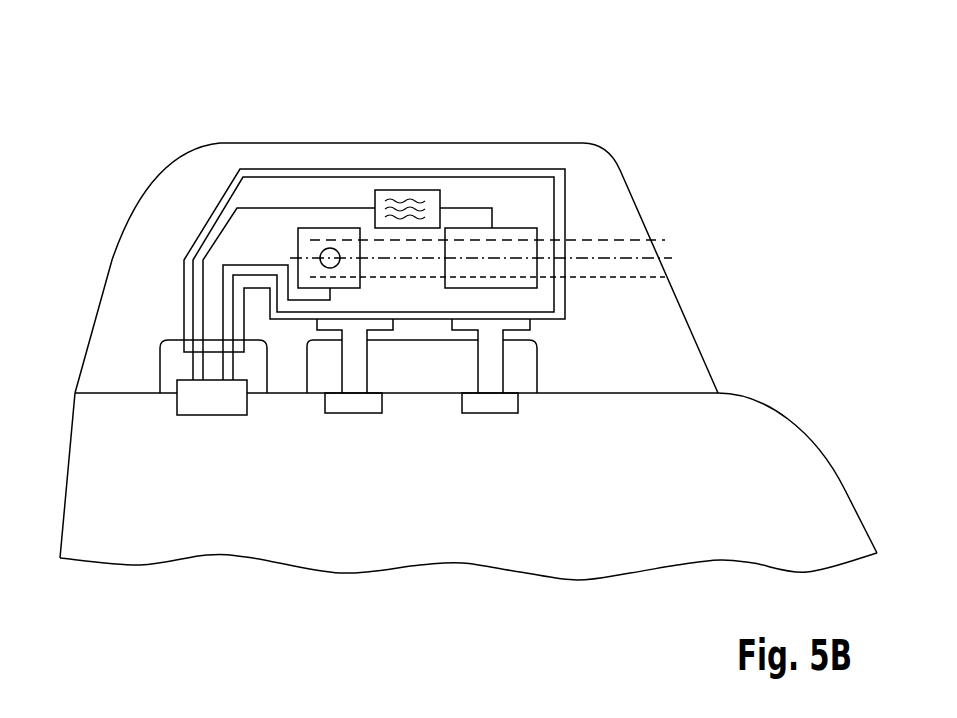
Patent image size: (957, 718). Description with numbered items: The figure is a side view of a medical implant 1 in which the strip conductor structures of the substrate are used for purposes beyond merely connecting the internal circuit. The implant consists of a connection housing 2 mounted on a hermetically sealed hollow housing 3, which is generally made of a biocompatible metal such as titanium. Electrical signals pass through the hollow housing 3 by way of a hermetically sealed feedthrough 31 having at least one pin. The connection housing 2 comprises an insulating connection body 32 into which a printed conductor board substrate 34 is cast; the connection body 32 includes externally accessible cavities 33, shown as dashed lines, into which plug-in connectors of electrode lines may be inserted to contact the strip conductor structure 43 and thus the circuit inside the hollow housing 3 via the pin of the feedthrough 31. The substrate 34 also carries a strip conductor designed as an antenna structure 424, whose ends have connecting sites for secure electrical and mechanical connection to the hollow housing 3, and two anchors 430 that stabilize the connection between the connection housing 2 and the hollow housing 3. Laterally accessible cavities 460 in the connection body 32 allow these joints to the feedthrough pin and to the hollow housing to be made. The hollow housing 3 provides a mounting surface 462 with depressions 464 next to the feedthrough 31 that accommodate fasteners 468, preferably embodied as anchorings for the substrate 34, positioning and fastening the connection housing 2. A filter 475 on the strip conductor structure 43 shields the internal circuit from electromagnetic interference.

The medical implant 1 is at (101, 106).
The connection housing 2 is at (396, 241).
The hollow housing 3 is at (422, 550).
The feedthrough 31 is at (212, 403).
The connection body 32 is at (182, 180).
The cavities 33 is at (648, 245).
The substrate 34 is at (525, 188).
The strip conductor structure 43 is at (343, 207).
The antenna structure 424 is at (297, 176).
The anchors 430 is at (520, 327).
The laterally accessible cavities 460 is at (257, 385).
The mounting surface 462 is at (687, 388).
The depressions 464 is at (352, 405).
The fasteners 468 is at (485, 370).
The filter 475 is at (407, 190).